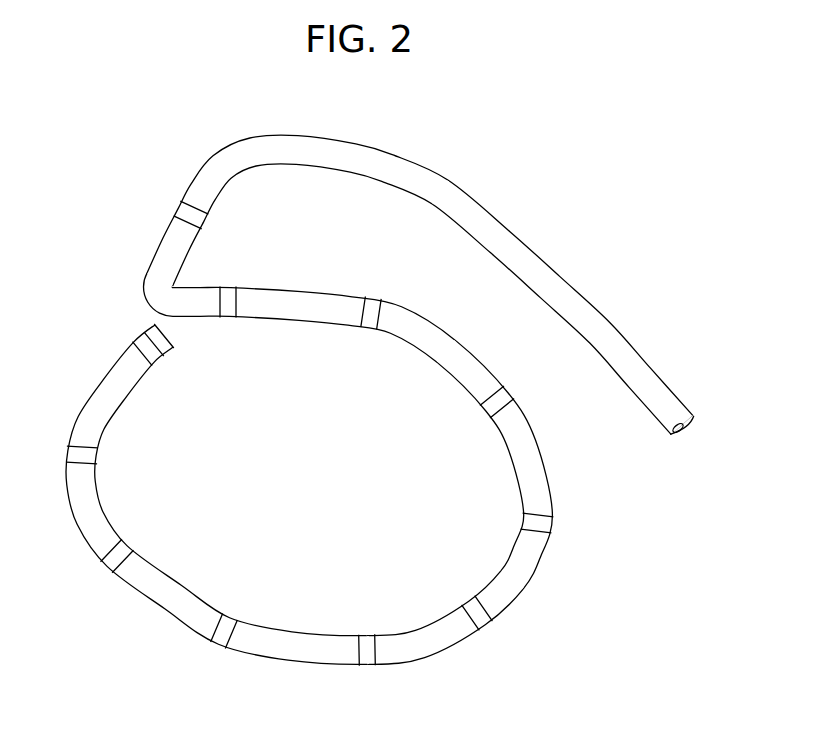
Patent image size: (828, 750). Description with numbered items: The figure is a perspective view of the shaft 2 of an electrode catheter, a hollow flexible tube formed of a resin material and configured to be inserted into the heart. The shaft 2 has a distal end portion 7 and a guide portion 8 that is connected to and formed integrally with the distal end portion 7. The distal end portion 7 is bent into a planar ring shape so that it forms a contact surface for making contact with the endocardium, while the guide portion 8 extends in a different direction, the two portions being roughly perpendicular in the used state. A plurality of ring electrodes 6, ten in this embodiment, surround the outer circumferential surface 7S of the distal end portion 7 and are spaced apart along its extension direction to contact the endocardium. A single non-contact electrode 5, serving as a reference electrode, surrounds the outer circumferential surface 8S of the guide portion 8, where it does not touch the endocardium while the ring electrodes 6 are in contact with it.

The shaft 2 is at (370, 397).
The non-contact electrode 5 is at (182, 211).
The ring electrodes 6 is at (373, 305).
The distal end portion 7 is at (309, 523).
The outer circumferential surface of the distal end portion 7S is at (432, 643).
The guide portion 8 is at (420, 264).
The outer circumferential surface of the guide portion 8S is at (386, 158).